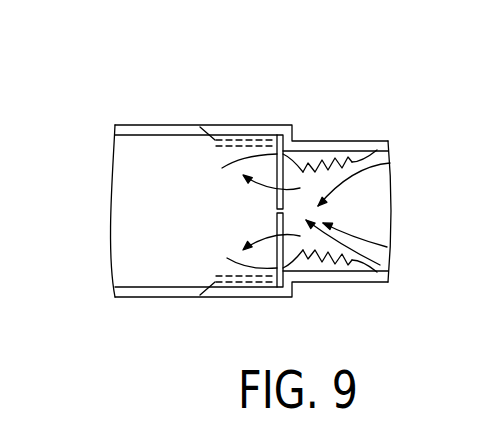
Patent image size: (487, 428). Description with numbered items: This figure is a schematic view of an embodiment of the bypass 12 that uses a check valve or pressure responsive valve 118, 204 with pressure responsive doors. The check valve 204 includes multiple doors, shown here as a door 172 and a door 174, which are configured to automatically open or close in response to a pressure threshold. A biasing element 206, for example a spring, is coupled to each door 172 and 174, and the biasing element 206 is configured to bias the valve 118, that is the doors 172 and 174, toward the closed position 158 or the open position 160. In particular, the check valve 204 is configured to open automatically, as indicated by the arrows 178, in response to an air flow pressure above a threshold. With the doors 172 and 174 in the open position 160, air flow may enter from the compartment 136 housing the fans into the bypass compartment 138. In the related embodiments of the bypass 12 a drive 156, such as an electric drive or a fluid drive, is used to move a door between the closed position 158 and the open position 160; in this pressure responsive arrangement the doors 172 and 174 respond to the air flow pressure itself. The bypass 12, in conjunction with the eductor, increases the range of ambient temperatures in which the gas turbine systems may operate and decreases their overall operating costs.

The bypass 12 is at (66, 79).
The bypass compartment 138 is at (128, 183).
The compartment 136 is at (375, 216).
The drive 156 is at (200, 127).
The open position 160 is at (242, 213).
The door 172 is at (286, 153).
The door 174 is at (287, 270).
The arrows 178 is at (262, 191).
The biasing element 206 is at (338, 160).
The check valve 204 is at (390, 163).
The valve 118 is at (387, 247).
The closed position 158 is at (380, 265).